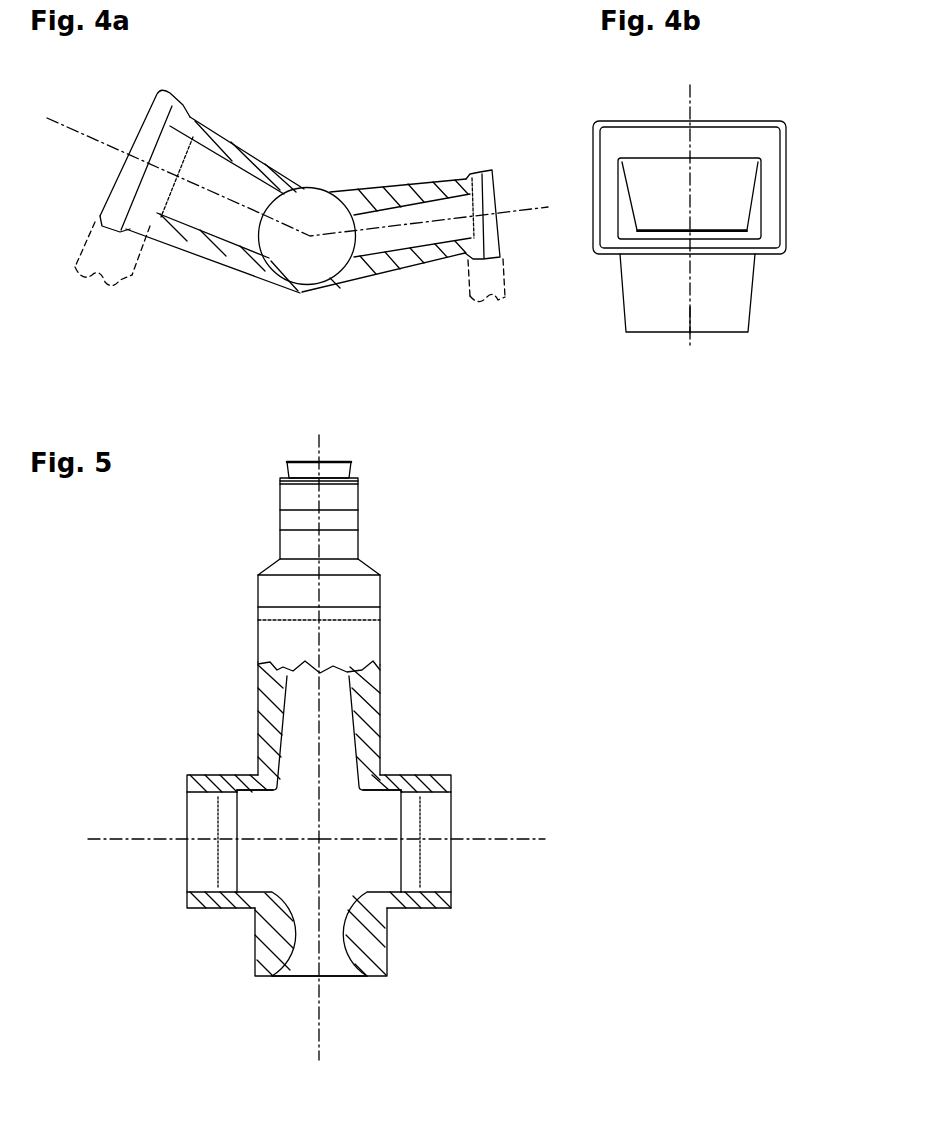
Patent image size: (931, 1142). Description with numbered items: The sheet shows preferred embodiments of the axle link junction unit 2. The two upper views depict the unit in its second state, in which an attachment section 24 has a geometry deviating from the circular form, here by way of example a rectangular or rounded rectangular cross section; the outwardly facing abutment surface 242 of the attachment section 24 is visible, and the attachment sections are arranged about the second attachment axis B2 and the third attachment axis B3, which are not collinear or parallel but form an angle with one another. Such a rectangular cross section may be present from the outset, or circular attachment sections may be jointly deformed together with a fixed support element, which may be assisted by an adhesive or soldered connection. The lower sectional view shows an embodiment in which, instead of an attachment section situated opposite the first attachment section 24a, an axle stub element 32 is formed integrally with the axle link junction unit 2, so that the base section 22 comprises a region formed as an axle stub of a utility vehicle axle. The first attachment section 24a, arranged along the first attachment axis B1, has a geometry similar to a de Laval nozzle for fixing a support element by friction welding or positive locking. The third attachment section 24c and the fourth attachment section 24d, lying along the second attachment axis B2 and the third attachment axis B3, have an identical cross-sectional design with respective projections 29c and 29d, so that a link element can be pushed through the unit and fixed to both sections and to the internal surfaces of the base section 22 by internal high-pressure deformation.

In FIG. 4a, the axle link junction unit 2 is at (317, 316).
In FIG. 5, the axle link junction unit 2 is at (408, 943).
In FIG. 4a, the base section 22 is at (317, 204).
In FIG. 5, the base section 22 is at (343, 834).
In FIG. 4a, the attachment section 24 is at (97, 274).
In FIG. 4b, the attachment section 24 is at (727, 137).
In FIG. 4a, the outwardly facing abutment surface 242 is at (114, 211).
In FIG. 4b, the outwardly facing abutment surface 242 is at (625, 132).
In FIG. 5, the first attachment section 24a is at (279, 956).
In FIG. 5, the third attachment section 24c is at (203, 893).
In FIG. 5, the fourth attachment section 24d is at (433, 893).
In FIG. 5, the projection 29c is at (228, 796).
In FIG. 5, the projection 29d is at (410, 796).
In FIG. 5, the axle stub element 32 is at (355, 651).
In FIG. 5, the first attachment axis B1 is at (325, 1022).
In FIG. 4a, the second attachment axis B2 is at (127, 167).
In FIG. 4b, the second attachment axis B2 is at (690, 320).
In FIG. 5, the second attachment axis B2 is at (168, 825).
In FIG. 4a, the third attachment axis B3 is at (397, 226).
In FIG. 5, the third attachment axis B3 is at (497, 838).